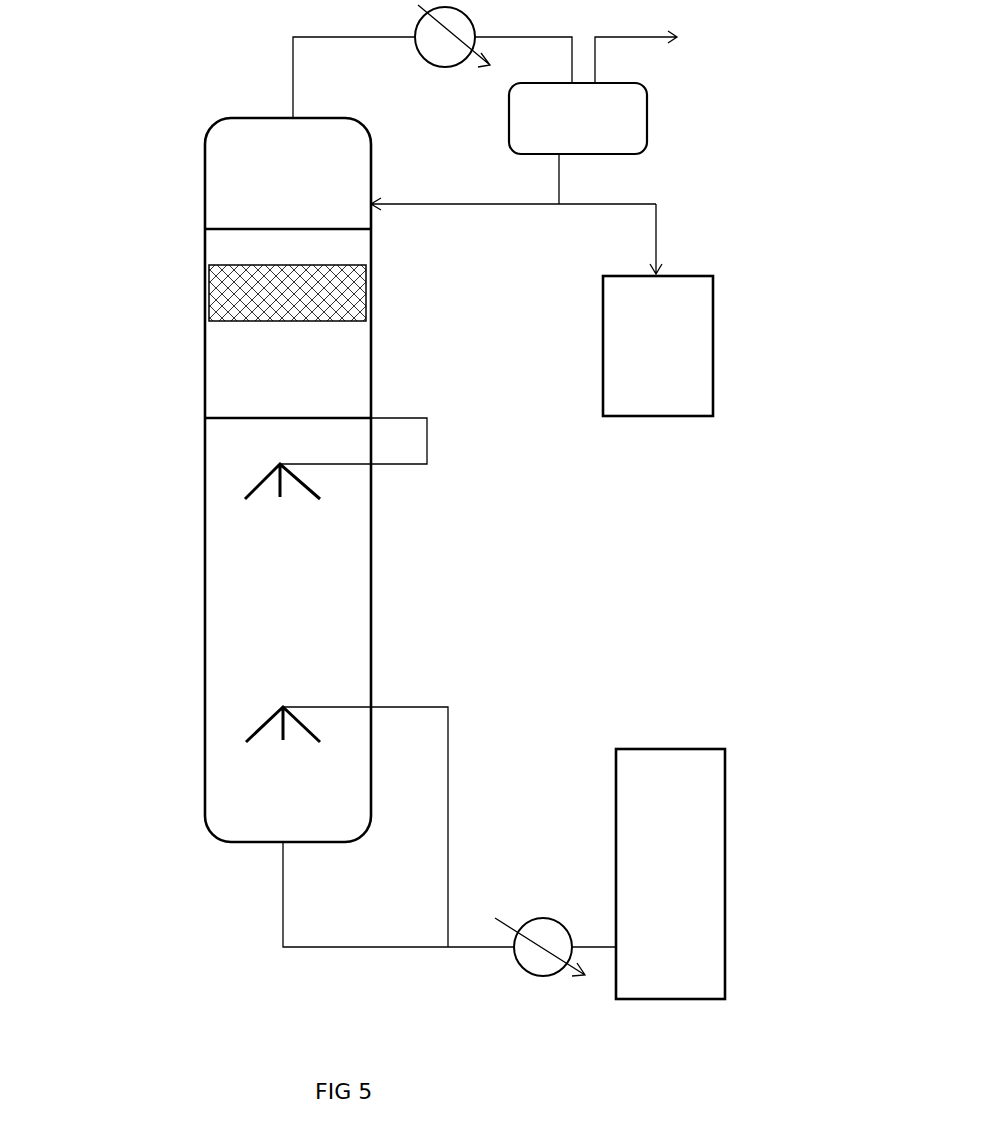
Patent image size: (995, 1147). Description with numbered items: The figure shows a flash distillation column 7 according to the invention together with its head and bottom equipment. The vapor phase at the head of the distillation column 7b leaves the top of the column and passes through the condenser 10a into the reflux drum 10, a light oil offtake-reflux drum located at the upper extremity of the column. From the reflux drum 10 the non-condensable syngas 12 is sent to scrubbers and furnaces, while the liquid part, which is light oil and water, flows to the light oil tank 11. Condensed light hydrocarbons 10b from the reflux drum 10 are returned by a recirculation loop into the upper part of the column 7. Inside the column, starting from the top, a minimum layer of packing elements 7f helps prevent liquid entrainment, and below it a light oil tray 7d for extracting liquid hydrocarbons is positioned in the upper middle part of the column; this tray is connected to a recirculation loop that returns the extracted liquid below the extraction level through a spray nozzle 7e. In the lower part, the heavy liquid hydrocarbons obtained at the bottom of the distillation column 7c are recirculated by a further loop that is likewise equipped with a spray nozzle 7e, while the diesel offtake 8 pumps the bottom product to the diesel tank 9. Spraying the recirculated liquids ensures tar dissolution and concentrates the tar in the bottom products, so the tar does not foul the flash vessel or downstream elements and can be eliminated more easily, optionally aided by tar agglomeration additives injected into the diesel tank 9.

The flash distillation column 7 is at (205, 582).
The vapor phase at the head of the distillation column 7b is at (292, 77).
The heavy liquid hydrocarbons obtained at the bottom of the distillation column 7c is at (282, 897).
The tray for extracting liquid hydrocarbons 7d is at (242, 421).
The spray nozzle 7e is at (313, 488).
The packing elements 7f is at (366, 298).
The diesel offtake 8 is at (465, 947).
The diesel tank 9 is at (693, 749).
The reflux drum 10 is at (647, 107).
The condenser 10a is at (445, 67).
The condensed light hydrocarbons 10b is at (559, 178).
The light oil tank 11 is at (657, 418).
The syngas to scrubber/furnaces 12 is at (628, 37).